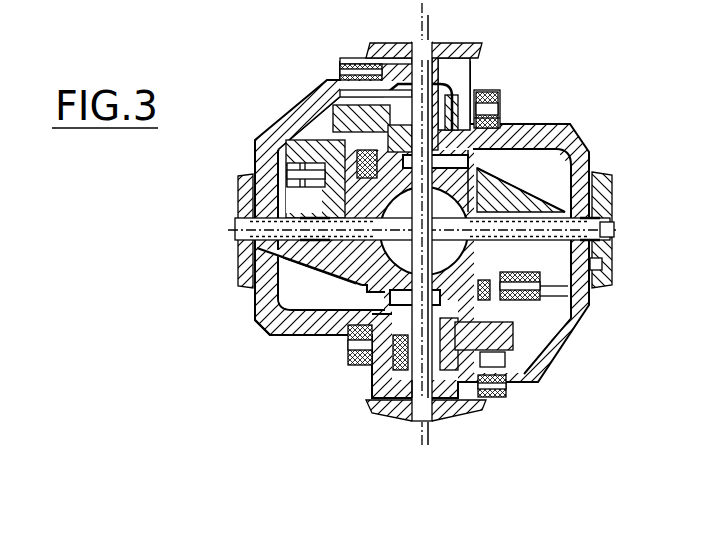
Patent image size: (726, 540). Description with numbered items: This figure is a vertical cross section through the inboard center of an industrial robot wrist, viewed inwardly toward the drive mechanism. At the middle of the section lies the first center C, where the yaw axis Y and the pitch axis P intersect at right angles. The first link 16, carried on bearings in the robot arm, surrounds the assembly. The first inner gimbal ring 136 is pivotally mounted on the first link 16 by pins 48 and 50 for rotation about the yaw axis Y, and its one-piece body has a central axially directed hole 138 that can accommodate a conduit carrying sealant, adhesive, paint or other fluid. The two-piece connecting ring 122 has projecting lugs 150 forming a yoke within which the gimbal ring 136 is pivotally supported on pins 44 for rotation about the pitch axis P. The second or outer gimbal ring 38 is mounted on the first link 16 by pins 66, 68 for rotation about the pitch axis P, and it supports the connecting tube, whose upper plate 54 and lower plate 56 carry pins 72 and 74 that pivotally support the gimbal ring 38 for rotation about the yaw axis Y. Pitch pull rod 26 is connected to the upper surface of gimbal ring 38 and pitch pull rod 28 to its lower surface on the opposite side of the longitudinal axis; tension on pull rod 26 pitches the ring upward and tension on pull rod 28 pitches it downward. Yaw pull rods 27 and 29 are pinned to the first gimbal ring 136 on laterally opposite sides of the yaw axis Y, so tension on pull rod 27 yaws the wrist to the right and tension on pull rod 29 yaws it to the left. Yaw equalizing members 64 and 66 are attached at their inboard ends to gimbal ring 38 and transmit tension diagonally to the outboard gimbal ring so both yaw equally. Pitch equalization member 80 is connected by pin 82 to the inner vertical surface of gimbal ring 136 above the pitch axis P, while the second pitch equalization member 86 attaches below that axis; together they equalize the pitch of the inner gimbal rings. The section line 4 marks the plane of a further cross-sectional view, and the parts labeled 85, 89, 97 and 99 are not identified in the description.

The section line 4- 4 is at (357, 50).
The first link 16 is at (312, 108).
The pitch pull rod 26 is at (500, 100).
The yaw pull rod 27 is at (258, 141).
The pitch pull rod 28 is at (358, 368).
The yaw pull rod 29 is at (502, 302).
The second gimbal ring 38 is at (567, 124).
The pins 44 is at (290, 254).
The pin 48 is at (478, 86).
The pin 50 is at (377, 383).
The upper plate 54 is at (483, 46).
The lower plate 56 is at (478, 412).
The yaw equalizing member 64 is at (340, 72).
The pin 66 is at (248, 229).
The pin 68 is at (614, 228).
The pin 72 is at (433, 40).
The pin 74 is at (435, 438).
The pitch equalization member 80 is at (335, 142).
The pin 82 is at (350, 159).
The spacer 85 is at (533, 357).
The second pitch equalization member 86 is at (470, 318).
The retaining ring 89 is at (553, 298).
The seal 97 is at (500, 118).
The bearing 99 is at (347, 358).
The connecting ring 122 is at (262, 327).
The first inner gimbal ring 136 is at (604, 267).
The central axially directed hole 138 is at (424, 231).
The lugs 150 is at (317, 213).
The pitch axis P is at (421, 241).
The first center C is at (407, 240).
The yaw axis Y is at (411, 456).